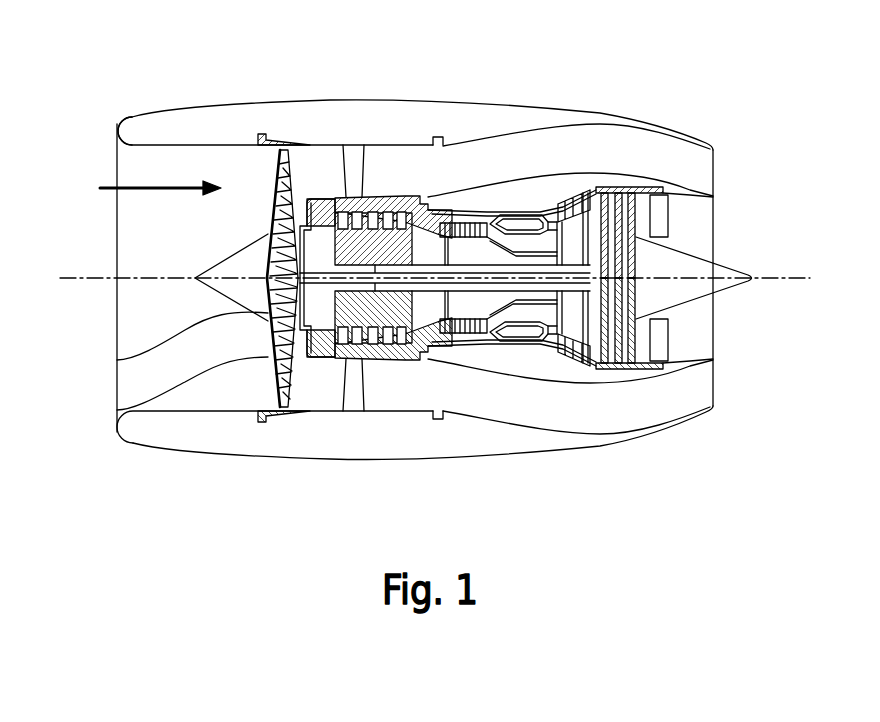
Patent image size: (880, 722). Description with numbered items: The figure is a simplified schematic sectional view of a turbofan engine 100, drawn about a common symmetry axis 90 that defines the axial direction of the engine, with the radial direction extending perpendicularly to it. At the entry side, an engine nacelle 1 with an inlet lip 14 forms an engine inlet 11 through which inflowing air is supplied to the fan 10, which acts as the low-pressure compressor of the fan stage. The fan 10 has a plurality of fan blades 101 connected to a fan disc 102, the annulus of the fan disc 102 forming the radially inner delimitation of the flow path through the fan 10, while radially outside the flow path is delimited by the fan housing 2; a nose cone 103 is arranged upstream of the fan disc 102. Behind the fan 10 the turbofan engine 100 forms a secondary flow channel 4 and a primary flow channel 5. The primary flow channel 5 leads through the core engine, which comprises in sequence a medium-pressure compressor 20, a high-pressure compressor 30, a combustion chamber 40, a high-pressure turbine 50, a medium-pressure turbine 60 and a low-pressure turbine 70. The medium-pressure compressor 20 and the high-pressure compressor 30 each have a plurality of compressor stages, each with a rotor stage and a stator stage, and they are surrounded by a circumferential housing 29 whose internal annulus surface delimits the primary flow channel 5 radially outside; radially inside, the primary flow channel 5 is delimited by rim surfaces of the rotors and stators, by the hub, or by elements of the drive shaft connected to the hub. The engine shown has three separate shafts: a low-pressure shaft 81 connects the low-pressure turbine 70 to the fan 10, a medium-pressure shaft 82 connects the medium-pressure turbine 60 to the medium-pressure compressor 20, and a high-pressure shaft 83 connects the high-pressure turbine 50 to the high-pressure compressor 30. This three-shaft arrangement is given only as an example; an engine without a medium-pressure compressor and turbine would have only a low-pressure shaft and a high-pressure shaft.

The engine nacelle 1 is at (153, 133).
The fan housing 2 is at (265, 198).
The secondary flow channel 4 is at (322, 200).
The primary flow channel 5 is at (345, 205).
The fan 10 is at (227, 145).
The engine inlet 11 is at (143, 150).
The inlet lip 14 is at (118, 128).
The medium-pressure compressor 20 is at (373, 209).
The circumferential housing 29 is at (425, 200).
The high-pressure compressor 30 is at (467, 241).
The combustion chamber 40 is at (522, 229).
The high-pressure turbine 50 is at (568, 211).
The medium-pressure turbine 60 is at (589, 202).
The low-pressure turbine 70 is at (637, 207).
The low-pressure shaft 81 is at (484, 287).
The medium-pressure shaft 82 is at (523, 294).
The high-pressure shaft 83 is at (547, 304).
The symmetry axis 90 is at (783, 278).
The turbofan engine 100 is at (449, 98).
The fan blades 101 is at (117, 410).
The fan disc 102 is at (117, 360).
The nose cone 103 is at (230, 263).